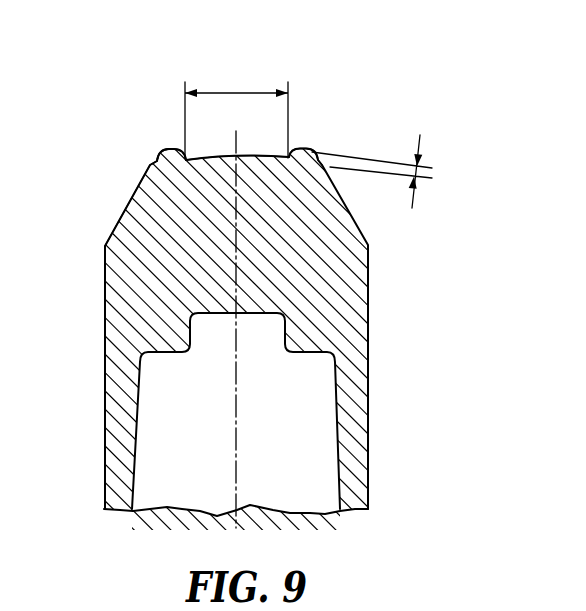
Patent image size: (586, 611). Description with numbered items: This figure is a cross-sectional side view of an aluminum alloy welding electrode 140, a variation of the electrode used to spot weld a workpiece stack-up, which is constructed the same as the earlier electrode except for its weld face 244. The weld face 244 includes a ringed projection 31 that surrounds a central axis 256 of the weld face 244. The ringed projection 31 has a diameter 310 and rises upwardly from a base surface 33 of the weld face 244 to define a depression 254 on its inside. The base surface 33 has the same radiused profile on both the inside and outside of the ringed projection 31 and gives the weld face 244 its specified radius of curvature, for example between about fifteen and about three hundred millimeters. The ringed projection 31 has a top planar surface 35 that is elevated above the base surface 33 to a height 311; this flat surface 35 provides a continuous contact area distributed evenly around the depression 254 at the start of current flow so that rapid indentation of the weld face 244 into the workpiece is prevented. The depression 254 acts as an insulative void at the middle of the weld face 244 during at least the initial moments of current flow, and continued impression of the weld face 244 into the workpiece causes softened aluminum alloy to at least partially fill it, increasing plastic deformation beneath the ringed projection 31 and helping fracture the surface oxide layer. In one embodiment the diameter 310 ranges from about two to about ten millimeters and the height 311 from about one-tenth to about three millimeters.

The aluminum alloy welding electrode 140 is at (95, 283).
The central axis 256 is at (237, 455).
The ringed projection 31 is at (150, 163).
The weld face 244 is at (150, 140).
The top planar surface 35 is at (173, 148).
The base surface 33 is at (273, 157).
The depression 254 is at (242, 150).
The diameter 310 is at (219, 93).
The height 311 is at (432, 176).